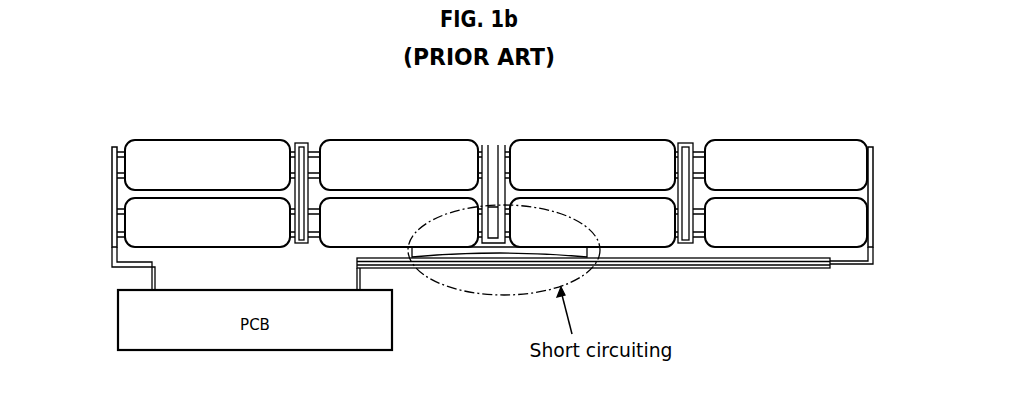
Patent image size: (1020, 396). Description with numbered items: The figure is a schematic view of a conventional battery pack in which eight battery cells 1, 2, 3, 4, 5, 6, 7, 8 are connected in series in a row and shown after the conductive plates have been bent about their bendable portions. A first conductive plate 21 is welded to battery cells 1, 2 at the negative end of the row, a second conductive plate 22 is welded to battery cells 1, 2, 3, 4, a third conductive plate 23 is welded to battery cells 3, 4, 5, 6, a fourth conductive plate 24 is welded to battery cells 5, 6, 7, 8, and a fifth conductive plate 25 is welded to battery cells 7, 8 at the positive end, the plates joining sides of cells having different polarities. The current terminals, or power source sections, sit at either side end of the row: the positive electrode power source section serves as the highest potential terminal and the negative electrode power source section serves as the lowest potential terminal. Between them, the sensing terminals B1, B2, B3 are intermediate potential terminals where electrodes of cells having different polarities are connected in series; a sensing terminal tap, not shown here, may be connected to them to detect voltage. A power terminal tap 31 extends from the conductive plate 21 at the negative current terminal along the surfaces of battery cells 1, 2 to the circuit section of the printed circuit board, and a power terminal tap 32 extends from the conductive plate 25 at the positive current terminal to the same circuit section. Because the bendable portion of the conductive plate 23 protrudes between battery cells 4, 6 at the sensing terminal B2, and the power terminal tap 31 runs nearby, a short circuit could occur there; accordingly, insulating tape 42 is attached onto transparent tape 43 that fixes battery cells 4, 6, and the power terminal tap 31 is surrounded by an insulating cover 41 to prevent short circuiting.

The battery cell 1 is at (786, 165).
The battery cell 2 is at (786, 222).
The battery cell 3 is at (592, 165).
The battery cell 4 is at (592, 222).
The battery cell 5 is at (399, 165).
The battery cell 6 is at (399, 222).
The battery cell 7 is at (207, 165).
The battery cell 8 is at (207, 222).
The first conductive plate 21 is at (866, 158).
The second conductive plate 22 is at (675, 158).
The third conductive plate 23 is at (482, 158).
The fourth conductive plate 24 is at (290, 158).
The fifth conductive plate 25 is at (110, 198).
The power terminal tap 31 is at (856, 270).
The power terminal tap 32 is at (111, 261).
The insulating cover 41 is at (743, 270).
The insulating tape 42 is at (500, 256).
The transparent tape 43 is at (458, 256).
The sensing terminal B1 is at (686, 180).
The sensing terminal B2 is at (493, 180).
The sensing terminal B3 is at (302, 180).